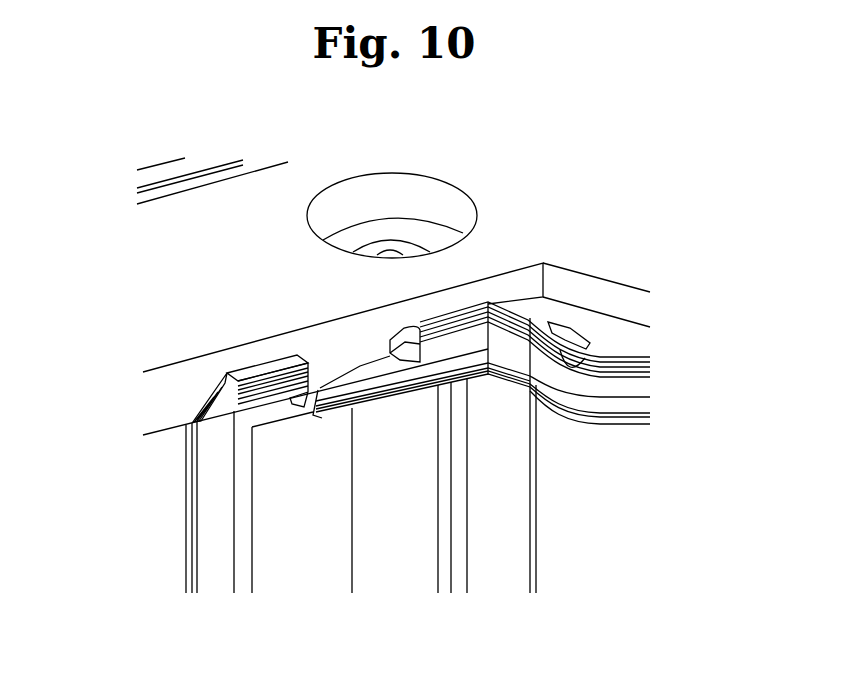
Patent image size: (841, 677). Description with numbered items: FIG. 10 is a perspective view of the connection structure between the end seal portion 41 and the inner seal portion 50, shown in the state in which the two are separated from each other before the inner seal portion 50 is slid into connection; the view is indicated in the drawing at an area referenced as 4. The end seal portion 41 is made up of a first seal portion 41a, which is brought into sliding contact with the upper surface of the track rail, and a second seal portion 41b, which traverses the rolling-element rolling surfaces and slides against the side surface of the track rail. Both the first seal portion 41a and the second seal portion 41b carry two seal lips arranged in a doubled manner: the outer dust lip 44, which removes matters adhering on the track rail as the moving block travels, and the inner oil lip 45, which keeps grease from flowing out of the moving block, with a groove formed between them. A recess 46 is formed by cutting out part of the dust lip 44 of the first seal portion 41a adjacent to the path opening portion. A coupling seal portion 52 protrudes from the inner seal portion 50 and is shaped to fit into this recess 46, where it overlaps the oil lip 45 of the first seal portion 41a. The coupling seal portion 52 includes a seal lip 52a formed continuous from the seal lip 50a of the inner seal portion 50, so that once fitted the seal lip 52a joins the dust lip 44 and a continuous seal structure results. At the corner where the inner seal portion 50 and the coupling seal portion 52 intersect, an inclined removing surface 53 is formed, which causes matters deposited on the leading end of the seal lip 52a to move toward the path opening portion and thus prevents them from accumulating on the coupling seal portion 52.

The vehicle body panel 4 is at (214, 238).
The end seal portion 41 is at (406, 367).
The first seal portion 41a is at (445, 300).
The second seal portion 41b is at (588, 328).
The dust lip 44 is at (565, 345).
The oil lip 45 is at (416, 382).
The recess 46 is at (367, 368).
The inner seal portion 50 is at (213, 489).
The seal lip 50a is at (192, 531).
The coupling seal portion 52 is at (252, 340).
The seal lip 52a is at (252, 372).
The inclined removing surface 53 is at (197, 402).